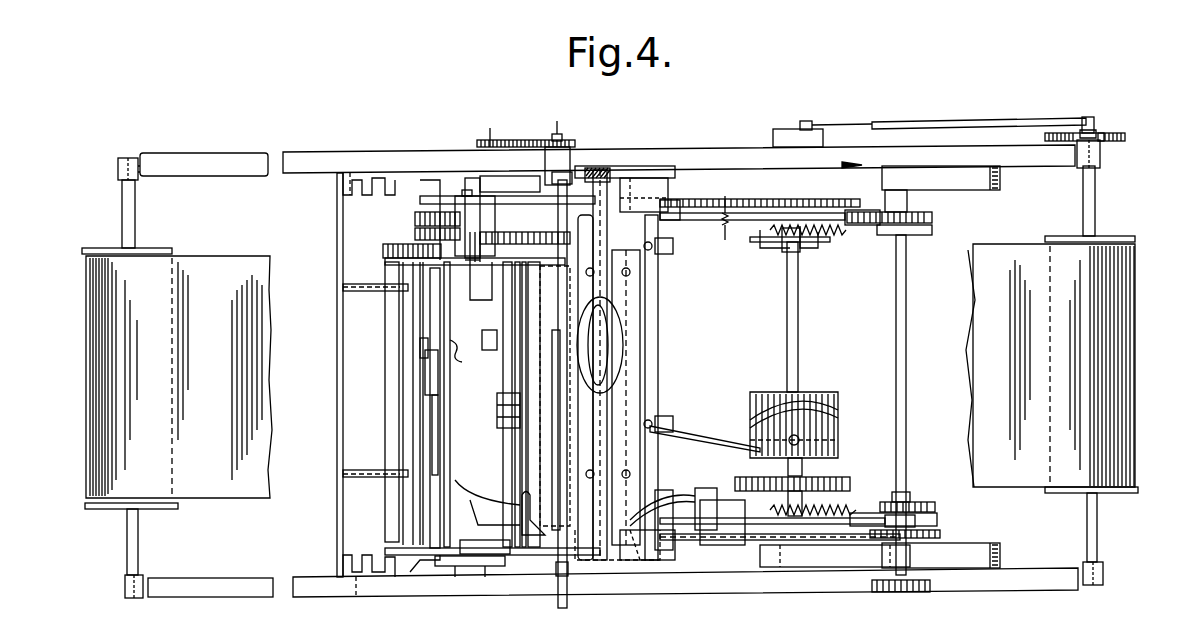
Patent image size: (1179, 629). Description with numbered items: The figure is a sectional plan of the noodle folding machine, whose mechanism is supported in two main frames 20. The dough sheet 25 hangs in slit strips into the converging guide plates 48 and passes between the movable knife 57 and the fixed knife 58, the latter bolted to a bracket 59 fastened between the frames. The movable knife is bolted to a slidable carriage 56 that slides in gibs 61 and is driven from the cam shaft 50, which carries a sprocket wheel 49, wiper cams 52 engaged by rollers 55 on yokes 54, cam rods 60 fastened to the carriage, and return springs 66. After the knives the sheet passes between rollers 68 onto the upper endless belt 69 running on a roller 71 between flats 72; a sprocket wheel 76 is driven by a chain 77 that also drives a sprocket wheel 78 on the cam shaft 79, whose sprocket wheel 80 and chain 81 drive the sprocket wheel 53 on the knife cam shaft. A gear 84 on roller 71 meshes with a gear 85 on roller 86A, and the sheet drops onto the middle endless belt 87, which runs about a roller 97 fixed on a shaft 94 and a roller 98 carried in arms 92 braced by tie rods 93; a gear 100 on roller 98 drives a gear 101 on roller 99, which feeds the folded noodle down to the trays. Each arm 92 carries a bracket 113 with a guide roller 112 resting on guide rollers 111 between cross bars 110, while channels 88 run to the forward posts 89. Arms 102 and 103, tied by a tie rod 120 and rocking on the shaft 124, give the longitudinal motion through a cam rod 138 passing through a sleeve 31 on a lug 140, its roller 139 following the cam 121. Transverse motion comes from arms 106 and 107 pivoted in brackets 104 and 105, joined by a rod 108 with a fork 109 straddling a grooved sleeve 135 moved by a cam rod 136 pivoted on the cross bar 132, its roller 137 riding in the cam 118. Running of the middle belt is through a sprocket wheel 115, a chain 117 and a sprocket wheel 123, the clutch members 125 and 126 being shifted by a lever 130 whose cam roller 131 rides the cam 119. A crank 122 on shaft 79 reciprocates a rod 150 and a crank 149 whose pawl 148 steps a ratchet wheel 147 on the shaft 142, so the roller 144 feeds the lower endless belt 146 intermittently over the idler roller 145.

The main frames 20 is at (974, 196).
The dough sheet 25 is at (612, 318).
The sleeve 31 is at (712, 494).
The converging guide plates 48 is at (628, 170).
The sprocket wheel 49 is at (866, 594).
The cam shaft 50 is at (906, 412).
The wiper cams 52 is at (904, 492).
The sprocket wheel 53 is at (940, 534).
The yokes 54 is at (937, 520).
The rollers 55 is at (935, 507).
The slidable carriage 56 is at (672, 254).
The movable knife 57 is at (552, 390).
The fixed knife 58 is at (640, 380).
The bracket 59 is at (666, 490).
The cam rods 60 is at (690, 222).
The gibs 61 is at (668, 190).
The springs 66 is at (836, 240).
The rollers 68 is at (620, 334).
The upper endless belt 69 is at (458, 292).
The roller 71 is at (450, 265).
The flats 72 is at (420, 184).
The sprocket wheel 76 is at (490, 176).
The chain 77 is at (740, 199).
The sprocket wheel 78 is at (840, 190).
The cam shaft 79 is at (798, 302).
The sprocket wheel 80 is at (740, 540).
The chain 81 is at (838, 548).
The gear 84 is at (468, 196).
The gear 85 is at (420, 200).
The roller 86A is at (414, 216).
The middle endless belt 87 is at (456, 346).
The channels 88 is at (228, 152).
The forward posts 89 is at (372, 196).
The arms 92 is at (386, 260).
The tie rods 93 is at (522, 340).
The shaft 94 is at (570, 605).
The roller 97 is at (526, 472).
The roller 98 is at (428, 352).
The roller 99 is at (390, 380).
The gear 100 is at (416, 230).
The gear 101 is at (382, 244).
The arm 102 is at (512, 566).
The arm 103 is at (545, 165).
The bracket 104 is at (554, 576).
The bracket 105 is at (570, 168).
The arm 106 is at (528, 490).
The arm 107 is at (556, 266).
The rod 108 is at (522, 458).
The fork 109 is at (508, 458).
The cross bars 110 is at (337, 437).
The guide rollers 111 is at (352, 292).
The guide roller 112 is at (440, 452).
The bracket 113 is at (440, 394).
The sprocket wheel 115 is at (560, 134).
The chain 117 is at (530, 140).
The cam 118 is at (820, 392).
The cam 119 is at (800, 250).
The tie rod 120 is at (560, 372).
The cam 121 is at (802, 466).
The crank 122 is at (790, 130).
The sprocket wheel 123 is at (490, 128).
The shaft 124 is at (503, 360).
The clutch member 125 is at (472, 178).
The clutch member 126 is at (498, 304).
The lever 130 is at (706, 244).
The cam roller 131 is at (790, 252).
The cross bar 132 is at (658, 290).
The grooved sleeve 135 is at (497, 430).
The cam rod 136 is at (672, 426).
The roller 137 is at (840, 440).
The cam rod 138 is at (718, 470).
The roller 139 is at (752, 477).
The lug 140 is at (716, 538).
The shaft 142 is at (1096, 184).
The roller 144 is at (1050, 256).
The idler roller 145 is at (172, 506).
The lower endless belt 146 is at (270, 500).
The ratchet wheel 147 is at (1125, 137).
The pawl 148 is at (1104, 134).
The crank 149 is at (1096, 128).
The rod 150 is at (878, 122).